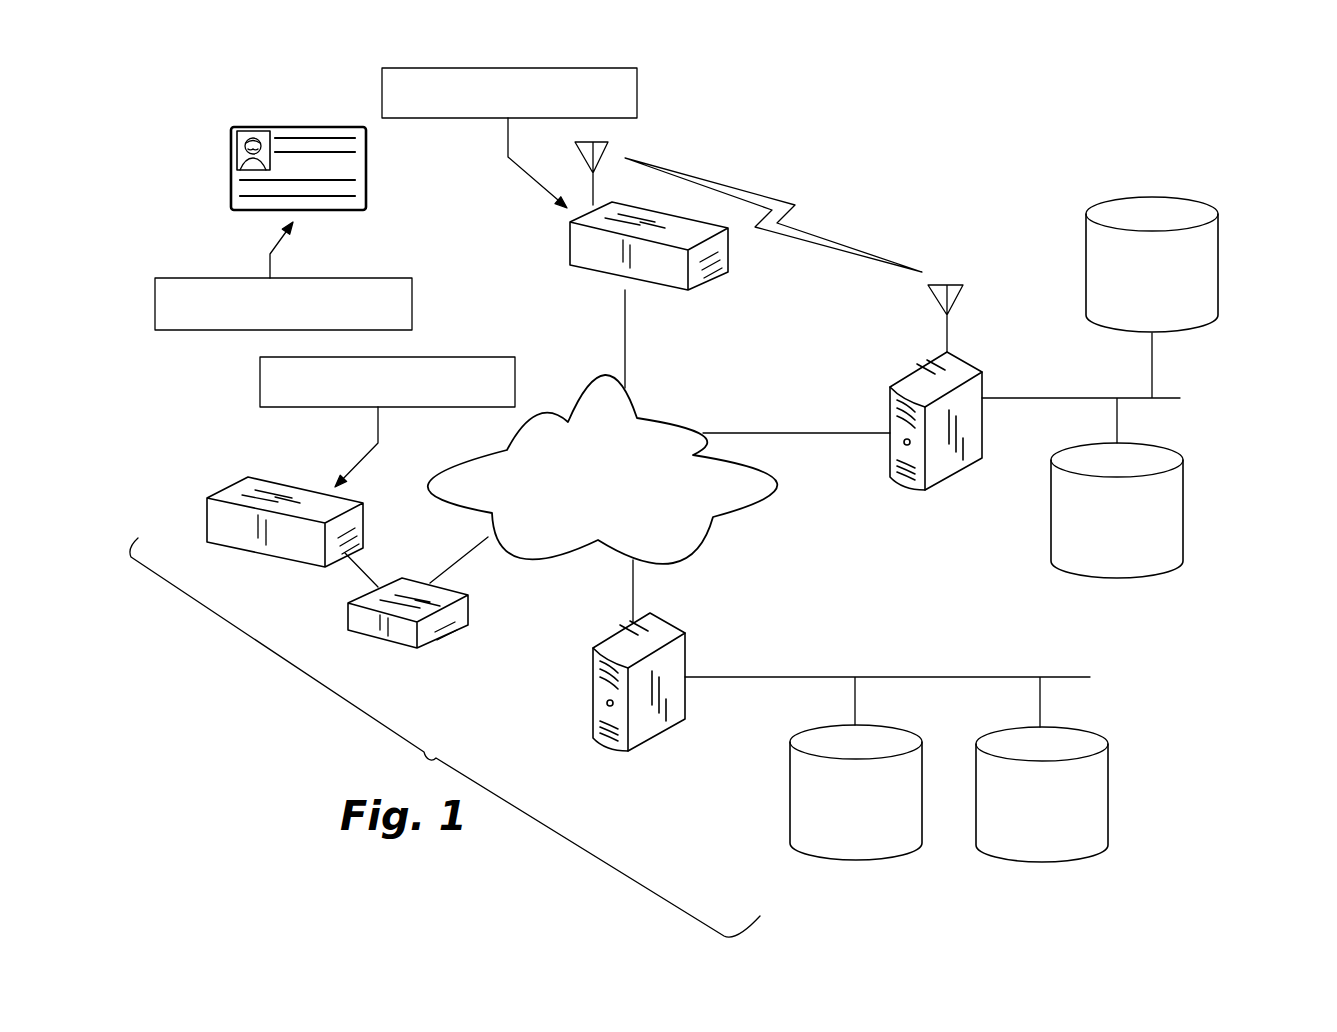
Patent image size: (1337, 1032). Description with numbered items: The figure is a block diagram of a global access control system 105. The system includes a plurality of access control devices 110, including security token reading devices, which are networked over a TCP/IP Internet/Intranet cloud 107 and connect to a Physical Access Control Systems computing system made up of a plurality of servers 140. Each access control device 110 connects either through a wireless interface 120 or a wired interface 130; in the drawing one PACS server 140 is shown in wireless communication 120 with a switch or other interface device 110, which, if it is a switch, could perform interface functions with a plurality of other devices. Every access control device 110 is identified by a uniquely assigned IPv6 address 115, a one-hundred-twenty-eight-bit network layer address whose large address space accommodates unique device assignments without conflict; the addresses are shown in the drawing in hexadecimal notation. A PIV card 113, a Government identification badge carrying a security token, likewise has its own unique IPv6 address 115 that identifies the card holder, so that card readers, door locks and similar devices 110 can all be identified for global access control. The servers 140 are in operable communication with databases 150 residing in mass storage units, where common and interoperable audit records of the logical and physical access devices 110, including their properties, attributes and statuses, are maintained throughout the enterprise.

The access control system 105 is at (1256, 130).
The TCP/IP Internet/Intranet cloud 107 is at (603, 469).
The access control device 110 is at (720, 277).
The PIV card 113 is at (231, 137).
The IPv6 address 115 is at (200, 330).
The wireless interface 120 is at (603, 148).
The wired interface 130 is at (460, 637).
The server 140 is at (902, 378).
The database 150 is at (1004, 529).